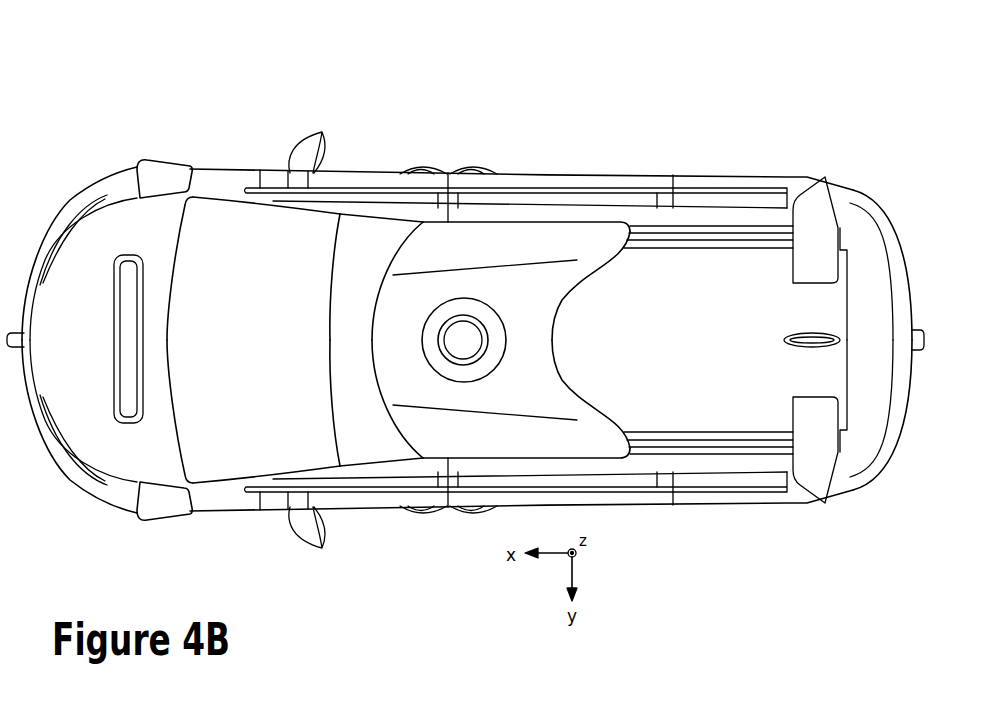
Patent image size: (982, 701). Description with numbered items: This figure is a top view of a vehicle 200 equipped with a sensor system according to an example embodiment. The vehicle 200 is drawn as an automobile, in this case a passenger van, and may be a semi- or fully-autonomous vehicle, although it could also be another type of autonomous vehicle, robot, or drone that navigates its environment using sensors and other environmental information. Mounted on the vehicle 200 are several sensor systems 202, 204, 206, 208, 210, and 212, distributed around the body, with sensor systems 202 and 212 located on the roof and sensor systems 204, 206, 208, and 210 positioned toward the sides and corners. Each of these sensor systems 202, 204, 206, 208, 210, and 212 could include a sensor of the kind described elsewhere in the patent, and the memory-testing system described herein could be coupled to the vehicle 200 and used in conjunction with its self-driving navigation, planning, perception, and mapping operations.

The vehicle 200 is at (814, 93).
The sensor system 202 is at (477, 298).
The sensor system 204 is at (14, 328).
The sensor system 206 is at (907, 330).
The sensor system 208 is at (147, 160).
The sensor system 210 is at (150, 516).
The sensor system 212 is at (421, 337).